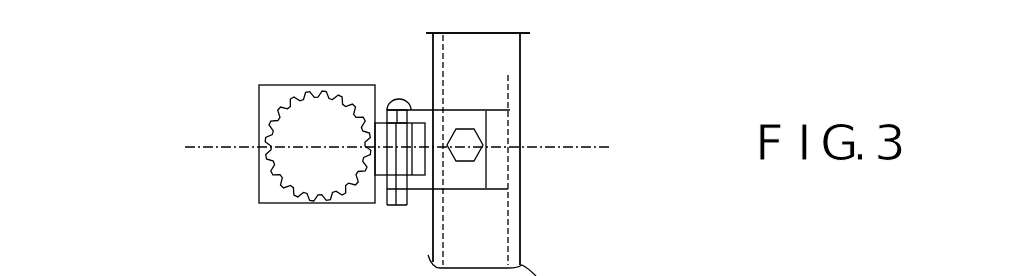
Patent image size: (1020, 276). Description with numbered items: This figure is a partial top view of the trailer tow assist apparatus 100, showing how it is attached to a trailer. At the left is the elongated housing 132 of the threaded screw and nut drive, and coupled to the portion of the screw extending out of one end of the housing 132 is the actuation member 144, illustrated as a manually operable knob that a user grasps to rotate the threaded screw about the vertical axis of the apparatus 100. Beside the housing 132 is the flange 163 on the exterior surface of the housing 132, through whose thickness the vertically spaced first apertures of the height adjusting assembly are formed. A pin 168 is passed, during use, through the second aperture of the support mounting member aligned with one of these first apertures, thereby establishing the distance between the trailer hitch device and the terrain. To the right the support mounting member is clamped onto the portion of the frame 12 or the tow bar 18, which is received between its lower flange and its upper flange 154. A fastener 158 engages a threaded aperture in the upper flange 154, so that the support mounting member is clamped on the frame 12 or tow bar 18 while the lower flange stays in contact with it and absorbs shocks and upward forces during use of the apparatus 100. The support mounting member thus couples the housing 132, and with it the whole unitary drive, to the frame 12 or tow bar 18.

The trailer tow assist apparatus 100 is at (158, 75).
The elongated housing 132 is at (297, 83).
The actuation member 144 is at (345, 137).
The pin 168 is at (408, 100).
The flange 163 is at (383, 158).
The frame 12 is at (500, 58).
The tow bar 18 is at (500, 58).
The upper flange 154 is at (472, 176).
The fastener 158 is at (468, 140).